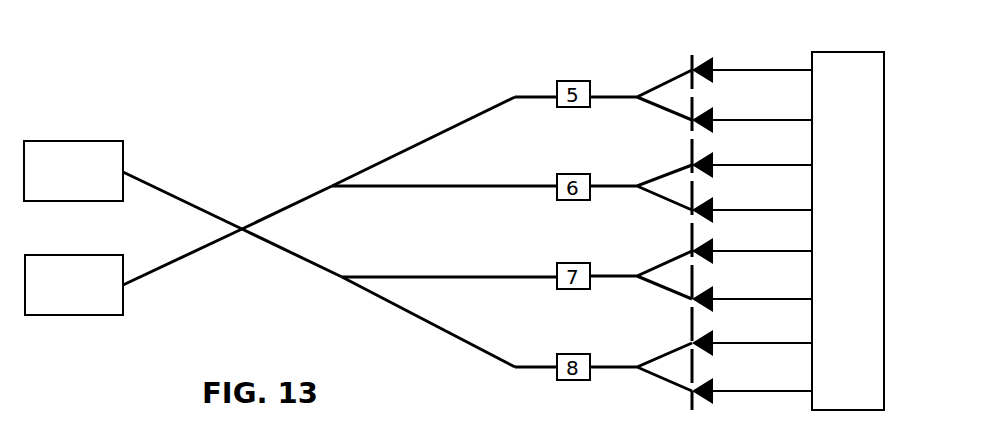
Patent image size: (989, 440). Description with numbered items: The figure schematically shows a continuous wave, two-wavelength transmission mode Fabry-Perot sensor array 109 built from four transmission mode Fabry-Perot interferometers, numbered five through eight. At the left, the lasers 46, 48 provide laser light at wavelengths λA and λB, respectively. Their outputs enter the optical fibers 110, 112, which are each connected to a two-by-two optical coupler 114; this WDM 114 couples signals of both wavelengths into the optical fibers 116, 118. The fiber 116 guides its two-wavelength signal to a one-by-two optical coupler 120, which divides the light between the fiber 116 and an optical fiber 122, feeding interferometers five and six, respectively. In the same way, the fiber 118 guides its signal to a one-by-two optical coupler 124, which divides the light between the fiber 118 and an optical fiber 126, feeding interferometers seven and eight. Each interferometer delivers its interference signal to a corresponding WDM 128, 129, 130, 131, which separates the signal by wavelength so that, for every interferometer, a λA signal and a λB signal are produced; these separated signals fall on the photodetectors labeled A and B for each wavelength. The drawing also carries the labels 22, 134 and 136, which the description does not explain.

The optical measurement system 22 is at (145, 0).
The laser 46 is at (85, 141).
The laser 48 is at (58, 315).
The transmission mode sensor array 109 is at (290, 92).
The optical fiber 110 is at (157, 185).
The optical fiber 112 is at (143, 278).
The 2×2 optical coupler 114 is at (240, 243).
The optical fiber 116 is at (282, 212).
The optical fiber 118 is at (278, 250).
The 1×2 optical coupler 120 is at (332, 172).
The optical fiber 122 is at (538, 185).
The 1×2 optical coupler 124 is at (332, 288).
The optical fiber 126 is at (462, 276).
The WDM 128 is at (637, 97).
The WDM 129 is at (637, 186).
The WDM 130 is at (637, 276).
The WDM 131 is at (637, 367).
The photodetector array 134 is at (702, 42).
The signal processor 136 is at (870, 52).